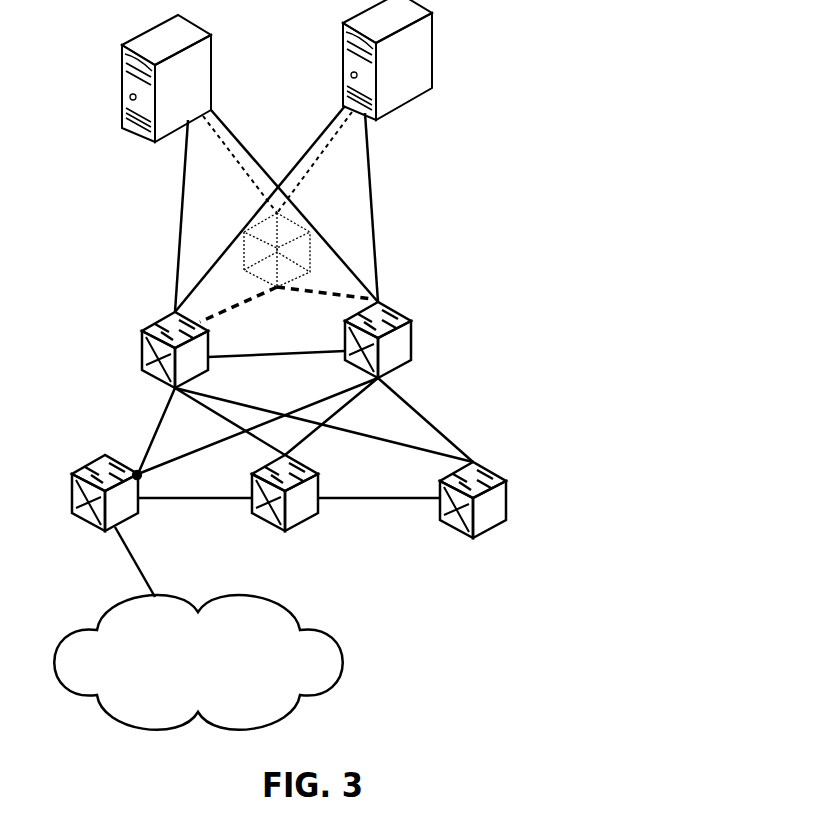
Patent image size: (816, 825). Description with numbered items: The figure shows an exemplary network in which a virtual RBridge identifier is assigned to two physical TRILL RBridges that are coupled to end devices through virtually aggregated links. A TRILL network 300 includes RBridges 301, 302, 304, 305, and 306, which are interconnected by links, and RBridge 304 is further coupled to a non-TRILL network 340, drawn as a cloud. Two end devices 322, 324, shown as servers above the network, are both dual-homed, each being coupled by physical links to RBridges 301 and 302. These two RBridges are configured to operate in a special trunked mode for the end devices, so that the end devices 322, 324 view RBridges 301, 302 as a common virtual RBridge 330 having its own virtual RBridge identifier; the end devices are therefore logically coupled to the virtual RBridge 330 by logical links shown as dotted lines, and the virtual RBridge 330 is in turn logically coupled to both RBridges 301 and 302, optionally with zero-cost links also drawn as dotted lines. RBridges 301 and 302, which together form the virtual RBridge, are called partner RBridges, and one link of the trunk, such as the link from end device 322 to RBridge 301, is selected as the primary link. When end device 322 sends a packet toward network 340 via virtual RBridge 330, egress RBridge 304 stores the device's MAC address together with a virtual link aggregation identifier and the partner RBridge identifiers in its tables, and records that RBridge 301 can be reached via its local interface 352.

The TRILL network 300 is at (549, 268).
The RBridge 301 is at (143, 370).
The RBridge 302 is at (349, 362).
The RBridge 304 is at (74, 517).
The RBridge 305 is at (255, 514).
The RBridge 306 is at (443, 523).
The end device 322 is at (211, 82).
The end device 324 is at (433, 68).
The virtual RBridge 330 is at (308, 228).
The non-TRILL network 340 is at (198, 662).
The interface 352 is at (141, 479).